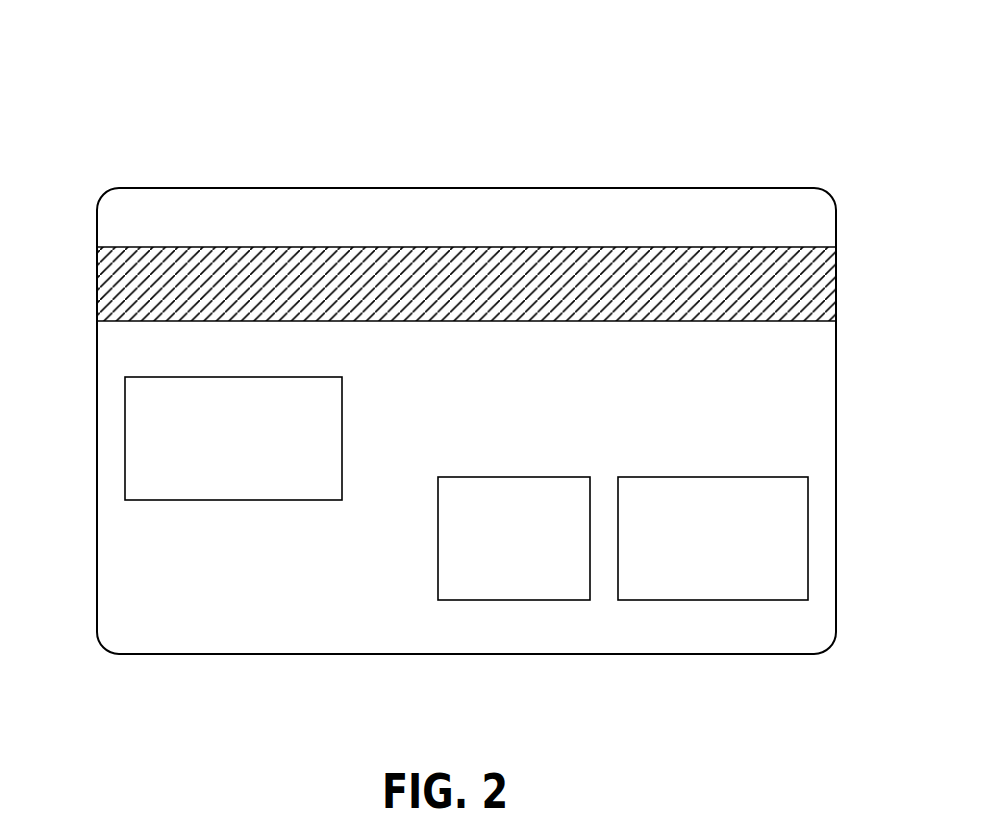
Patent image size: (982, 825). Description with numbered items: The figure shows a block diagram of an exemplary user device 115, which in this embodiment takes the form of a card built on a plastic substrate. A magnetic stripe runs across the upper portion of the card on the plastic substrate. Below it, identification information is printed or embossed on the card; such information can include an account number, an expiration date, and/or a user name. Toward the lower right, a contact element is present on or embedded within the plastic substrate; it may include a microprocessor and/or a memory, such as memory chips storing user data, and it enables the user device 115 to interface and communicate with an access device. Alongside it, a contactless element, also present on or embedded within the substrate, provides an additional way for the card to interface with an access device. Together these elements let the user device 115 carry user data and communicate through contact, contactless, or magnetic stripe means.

The user device 115 is at (185, 129).